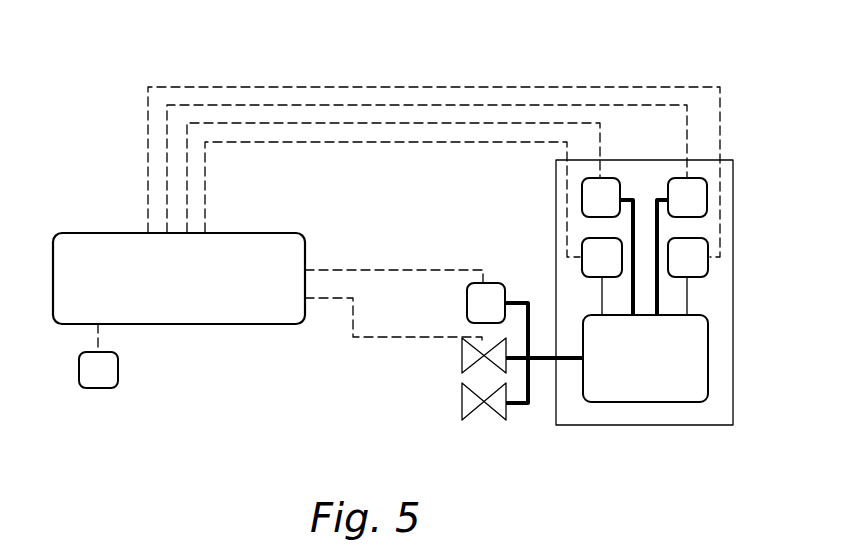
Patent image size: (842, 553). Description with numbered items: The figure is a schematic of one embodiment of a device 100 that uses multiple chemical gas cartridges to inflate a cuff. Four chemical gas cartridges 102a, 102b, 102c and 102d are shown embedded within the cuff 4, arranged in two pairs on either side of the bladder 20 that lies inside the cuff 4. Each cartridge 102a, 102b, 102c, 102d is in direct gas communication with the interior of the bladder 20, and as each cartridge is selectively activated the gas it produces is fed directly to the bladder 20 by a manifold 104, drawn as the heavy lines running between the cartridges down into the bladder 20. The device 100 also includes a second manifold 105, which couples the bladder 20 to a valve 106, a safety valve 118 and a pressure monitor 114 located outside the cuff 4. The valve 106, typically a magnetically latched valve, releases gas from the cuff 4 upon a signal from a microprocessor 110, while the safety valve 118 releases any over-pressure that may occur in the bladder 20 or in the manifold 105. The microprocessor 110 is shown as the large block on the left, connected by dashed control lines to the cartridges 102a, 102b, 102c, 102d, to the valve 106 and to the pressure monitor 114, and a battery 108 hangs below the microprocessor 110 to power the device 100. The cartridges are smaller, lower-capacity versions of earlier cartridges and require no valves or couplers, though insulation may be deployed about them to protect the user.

The device 100 is at (407, 68).
The manifold 104 is at (633, 194).
The second manifold 105 is at (530, 395).
The valve 106 is at (462, 352).
The battery 108 is at (100, 388).
The microprocessor 110 is at (188, 283).
The pressure monitor 114 is at (467, 300).
The safety valve 118 is at (462, 400).
The cuff 4 is at (734, 356).
The bladder 20 is at (661, 360).
The chemical gas cartridge 102a is at (582, 190).
The chemical gas cartridge 102b is at (582, 250).
The chemical gas cartridge 102c is at (707, 190).
The chemical gas cartridge 102d is at (707, 242).